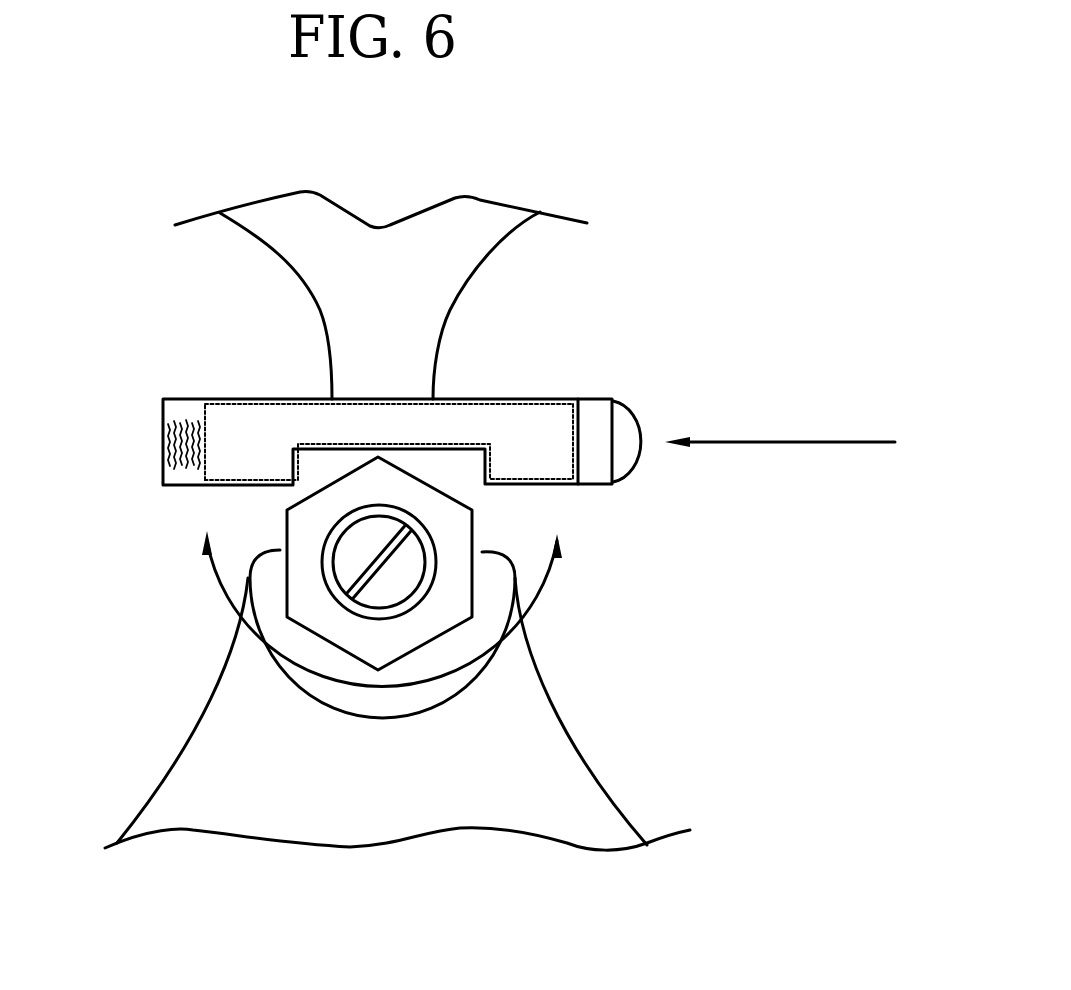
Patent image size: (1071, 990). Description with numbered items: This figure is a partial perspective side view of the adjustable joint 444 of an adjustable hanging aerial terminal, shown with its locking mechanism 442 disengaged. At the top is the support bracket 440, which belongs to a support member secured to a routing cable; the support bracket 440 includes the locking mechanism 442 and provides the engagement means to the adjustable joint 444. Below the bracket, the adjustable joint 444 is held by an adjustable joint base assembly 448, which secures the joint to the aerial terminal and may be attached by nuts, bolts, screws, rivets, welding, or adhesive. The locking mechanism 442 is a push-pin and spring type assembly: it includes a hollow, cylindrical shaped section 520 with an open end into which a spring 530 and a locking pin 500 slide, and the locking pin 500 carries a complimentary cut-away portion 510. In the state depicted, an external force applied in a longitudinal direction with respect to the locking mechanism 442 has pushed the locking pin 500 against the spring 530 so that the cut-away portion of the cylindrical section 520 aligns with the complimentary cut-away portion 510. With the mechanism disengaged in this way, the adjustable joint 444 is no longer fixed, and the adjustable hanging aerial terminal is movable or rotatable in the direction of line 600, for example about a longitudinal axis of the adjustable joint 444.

The support bracket 440 is at (283, 230).
The locking mechanism 442 is at (612, 306).
The adjustable joint 444 is at (338, 538).
The adjustable joint base assembly 448 is at (195, 787).
The locking pin 500 is at (588, 398).
The complimentary cut-away portion 510 is at (457, 441).
The hollow, cylindrical shaped section 520 is at (258, 398).
The spring 530 is at (185, 418).
The line 600 is at (553, 626).